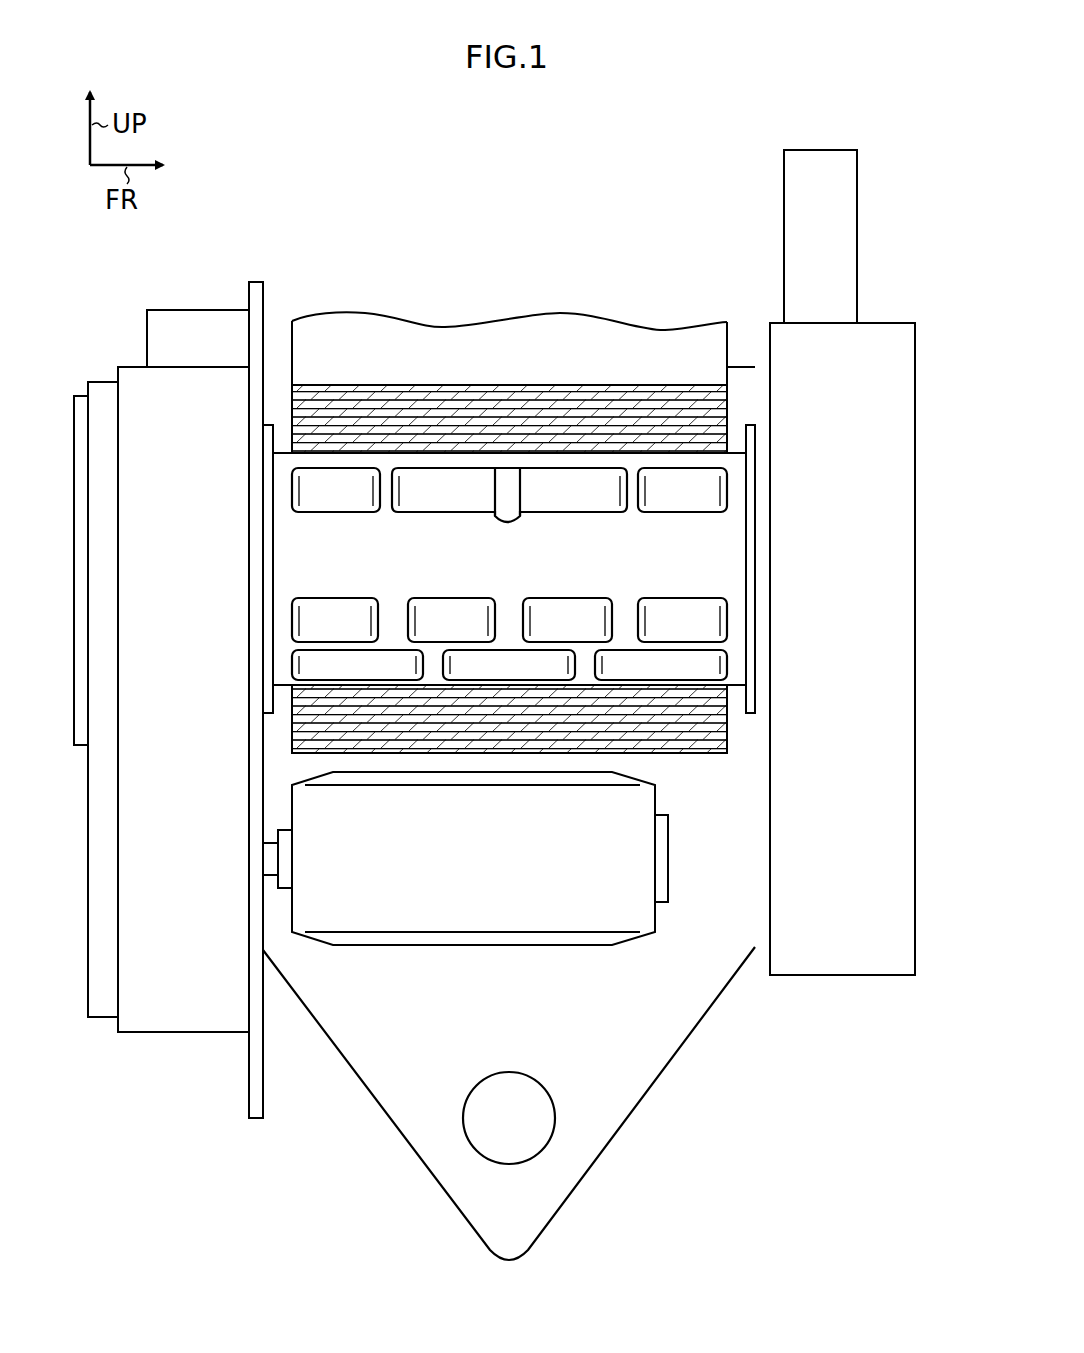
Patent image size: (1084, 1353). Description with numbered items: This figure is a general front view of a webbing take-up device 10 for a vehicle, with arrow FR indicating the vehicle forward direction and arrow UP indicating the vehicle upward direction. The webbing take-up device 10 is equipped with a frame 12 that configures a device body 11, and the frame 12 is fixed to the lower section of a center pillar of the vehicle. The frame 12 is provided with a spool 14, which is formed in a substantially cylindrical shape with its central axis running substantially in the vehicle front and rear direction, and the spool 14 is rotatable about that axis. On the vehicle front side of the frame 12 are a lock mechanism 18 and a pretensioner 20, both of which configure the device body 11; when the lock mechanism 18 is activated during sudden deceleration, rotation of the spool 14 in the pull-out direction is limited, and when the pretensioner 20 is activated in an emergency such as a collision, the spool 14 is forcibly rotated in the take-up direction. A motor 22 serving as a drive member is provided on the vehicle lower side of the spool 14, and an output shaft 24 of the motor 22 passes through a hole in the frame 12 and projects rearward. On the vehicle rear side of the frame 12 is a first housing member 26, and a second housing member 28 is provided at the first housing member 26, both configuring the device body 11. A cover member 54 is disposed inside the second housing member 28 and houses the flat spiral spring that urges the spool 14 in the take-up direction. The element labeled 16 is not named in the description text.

The webbing take-up device 10 is at (524, 297).
The device body 11 is at (248, 1133).
The frame 12 is at (572, 1196).
The spool 14 is at (737, 567).
The stator coil 16 is at (440, 333).
The lock mechanism 18 is at (912, 584).
The pretensioner 20 is at (852, 279).
The motor 22 is at (467, 910).
The output shaft 24 is at (270, 860).
The first housing member 26 is at (167, 1033).
The second housing member 28 is at (105, 1020).
The cover member 54 is at (80, 390).